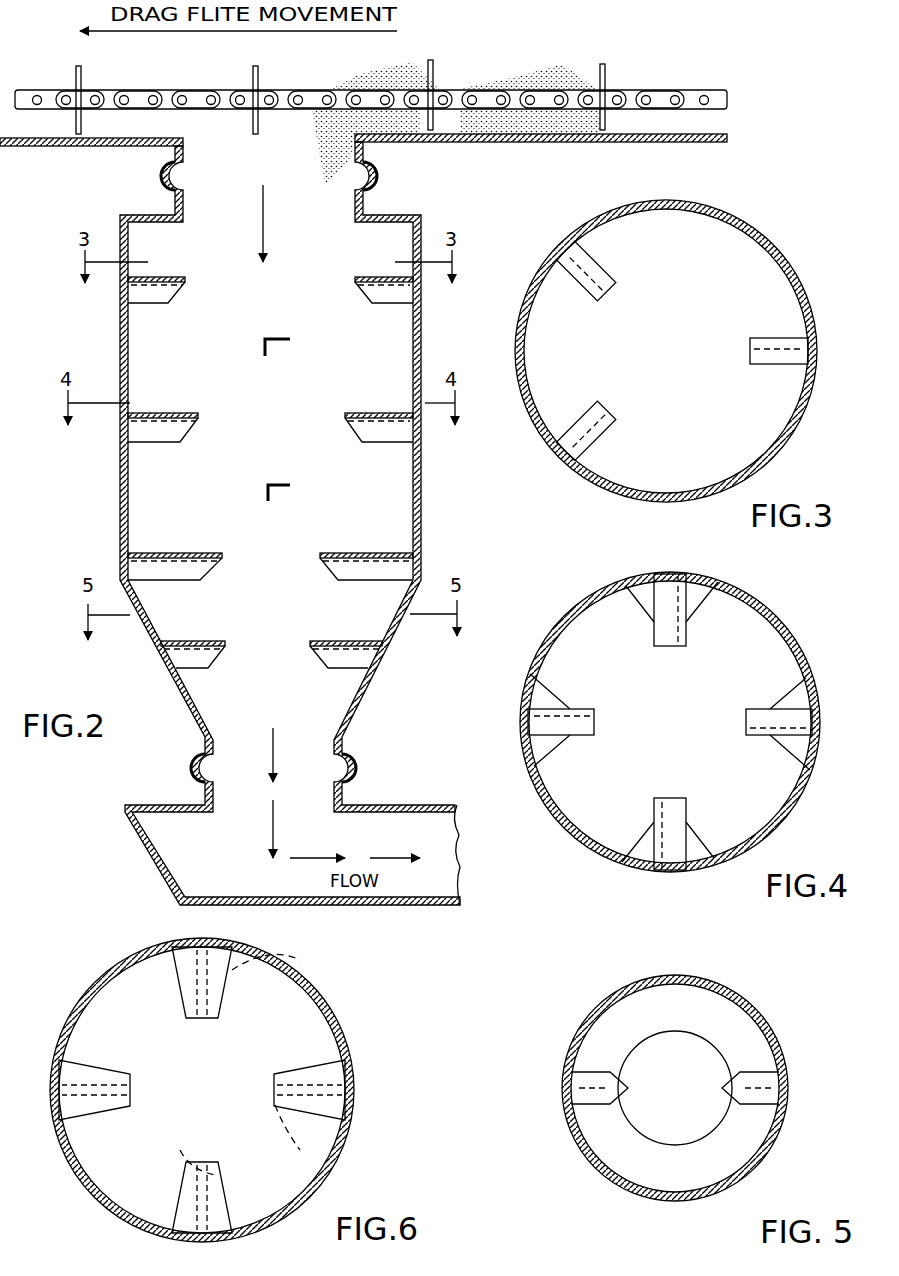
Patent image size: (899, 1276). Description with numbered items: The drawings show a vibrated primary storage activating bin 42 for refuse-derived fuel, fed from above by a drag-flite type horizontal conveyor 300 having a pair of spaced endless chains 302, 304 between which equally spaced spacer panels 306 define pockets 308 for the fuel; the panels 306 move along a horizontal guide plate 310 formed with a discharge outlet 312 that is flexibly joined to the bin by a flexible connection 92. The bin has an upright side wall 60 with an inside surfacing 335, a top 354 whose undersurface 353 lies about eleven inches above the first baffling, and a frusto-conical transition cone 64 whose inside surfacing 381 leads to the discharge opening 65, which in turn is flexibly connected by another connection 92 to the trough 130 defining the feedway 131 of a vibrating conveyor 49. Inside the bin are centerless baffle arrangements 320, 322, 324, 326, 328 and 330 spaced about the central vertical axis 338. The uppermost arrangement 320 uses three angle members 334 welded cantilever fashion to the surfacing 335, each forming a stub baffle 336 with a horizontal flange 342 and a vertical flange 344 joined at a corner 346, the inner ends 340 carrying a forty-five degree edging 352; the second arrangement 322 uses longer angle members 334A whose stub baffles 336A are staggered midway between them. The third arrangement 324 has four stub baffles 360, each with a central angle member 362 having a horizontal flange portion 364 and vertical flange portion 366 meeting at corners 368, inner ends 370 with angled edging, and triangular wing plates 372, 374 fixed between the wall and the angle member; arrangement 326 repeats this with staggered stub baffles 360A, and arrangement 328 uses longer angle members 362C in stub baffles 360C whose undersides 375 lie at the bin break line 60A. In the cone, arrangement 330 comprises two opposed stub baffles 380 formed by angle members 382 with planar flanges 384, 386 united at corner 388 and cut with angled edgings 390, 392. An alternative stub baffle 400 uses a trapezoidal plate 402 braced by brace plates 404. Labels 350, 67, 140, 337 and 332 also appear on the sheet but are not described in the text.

In FIG. 2, the drag-flite type horizontal conveyor 300 is at (375, 98).
In FIG. 2, the endless chain 302 is at (512, 90).
In FIG. 2, the endless chain 304 is at (468, 90).
In FIG. 2, the spacer panel 306 is at (82, 74).
In FIG. 2, the pocket 308 is at (567, 72).
In FIG. 2, the horizontal guide plate 310 is at (720, 134).
In FIG. 2, the RDF discharge outlet 312 is at (215, 136).
In FIG. 2, the corner 388 is at (338, 94).
In FIG. 5, the corner 388 is at (760, 1090).
In FIG. 2, the flexible connection 92 is at (158, 176).
In FIG. 2, the bin top 354 is at (378, 212).
In FIG. 2, the undersurface of top 353 is at (416, 214).
In FIG. 2, the primary storage activating bin 42 is at (244, 523).
In FIG. 3, the primary storage activating bin 42 is at (666, 332).
In FIG. 5, the primary storage activating bin 42 is at (673, 1065).
In FIG. 2, the bin side wall 60 is at (421, 362).
In FIG. 3, the bin side wall 60 is at (735, 222).
In FIG. 6, the bin side wall 60 is at (255, 1090).
In FIG. 2, the uppermost baffle arrangement 320 is at (140, 290).
In FIG. 3, the uppermost baffle arrangement 320 is at (695, 354).
In FIG. 2, the inner end 340 is at (165, 283).
In FIG. 3, the inner end 340 is at (610, 281).
In FIG. 2, the horizontal flange 342 is at (190, 280).
In FIG. 3, the horizontal flange 342 is at (592, 260).
In FIG. 2, the edging 352 is at (176, 300).
In FIG. 2, the upper right nozzle 350 is at (312, 278).
In FIG. 2, the vertical flange 344 is at (180, 305).
In FIG. 2, the second baffle arrangement 322 is at (156, 347).
In FIG. 2, the angle member 334A is at (261, 348).
In FIG. 2, the stub baffle 336A is at (266, 372).
In FIG. 2, the third baffle arrangement 324 is at (140, 428).
In FIG. 4, the third baffle arrangement 324 is at (806, 690).
In FIG. 2, the inner end 370 is at (332, 416).
In FIG. 4, the inner end 370 is at (744, 725).
In FIG. 2, the triangular wing plate 372 is at (148, 414).
In FIG. 4, the triangular wing plate 372 is at (640, 572).
In FIG. 2, the triangular wing plate 374 is at (382, 416).
In FIG. 4, the triangular wing plate 374 is at (690, 582).
In FIG. 2, the angle member 362 is at (180, 426).
In FIG. 4, the angle member 362 is at (664, 650).
In FIG. 2, the stub baffle 360 is at (124, 462).
In FIG. 4, the stub baffle 360 is at (673, 734).
In FIG. 2, the stub baffle 360A is at (246, 484).
In FIG. 2, the fourth baffle arrangement 326 is at (246, 500).
In FIG. 2, the vertical flange portion 366 is at (388, 446).
In FIG. 2, the fifth baffle arrangement 328 is at (128, 552).
In FIG. 2, the stub baffle 360C is at (262, 552).
In FIG. 2, the inside surfacing 335 is at (413, 512).
In FIG. 3, the inside surfacing 335 is at (802, 406).
In FIG. 2, the angle member 362C is at (420, 550).
In FIG. 2, the underside 375 is at (196, 580).
In FIG. 2, the bin break line 60A is at (426, 578).
In FIG. 2, the cone baffle arrangement 330 is at (186, 650).
In FIG. 2, the stub baffle 380 is at (204, 640).
In FIG. 5, the stub baffle 380 is at (693, 1075).
In FIG. 2, the angled edging 392 is at (218, 656).
In FIG. 5, the angled edging 392 is at (728, 1105).
In FIG. 2, the planar flange 386 is at (200, 670).
In FIG. 5, the planar flange 386 is at (606, 1080).
In FIG. 2, the angled edging 390 is at (326, 666).
In FIG. 5, the angled edging 390 is at (746, 1084).
In FIG. 2, the inside surfacing of cone 381 is at (386, 636).
In FIG. 2, the angle member 382 is at (336, 670).
In FIG. 5, the angle member 382 is at (780, 1083).
In FIG. 2, the transitional discharge cone 64 is at (352, 692).
In FIG. 5, the transitional discharge cone 64 is at (695, 980).
In FIG. 2, the bin discharge opening 65 is at (302, 736).
In FIG. 5, the bin discharge opening 65 is at (704, 1054).
In FIG. 2, the lower clamp 67 is at (219, 750).
In FIG. 2, the discharge duct top plate 140 is at (448, 805).
In FIG. 2, the feedway 131 is at (430, 832).
In FIG. 2, the vibrating conveyor 49 is at (152, 880).
In FIG. 2, the conveyor trough 130 is at (446, 906).
In FIG. 3, the nozzle mounting 337 is at (596, 242).
In FIG. 3, the angle member 334 is at (624, 277).
In FIG. 3, the angle member corner 346 is at (578, 298).
In FIG. 3, the stub baffle 336 is at (600, 306).
In FIG. 3, the bin central vertical axis 338 is at (665, 352).
In FIG. 4, the bin central vertical axis 338 is at (668, 720).
In FIG. 5, the bin central vertical axis 338 is at (673, 1090).
In FIG. 4, the corner 368 is at (700, 610).
In FIG. 4, the horizontal flange portion 364 is at (652, 636).
In FIG. 6, the housing wall 332 is at (352, 1078).
In FIG. 6, the stub baffle 400 is at (221, 1090).
In FIG. 6, the trapezoidal plate 402 is at (215, 1010).
In FIG. 6, the brace plate 404 is at (272, 964).
In FIG. 5, the planar flange 384 is at (764, 1075).